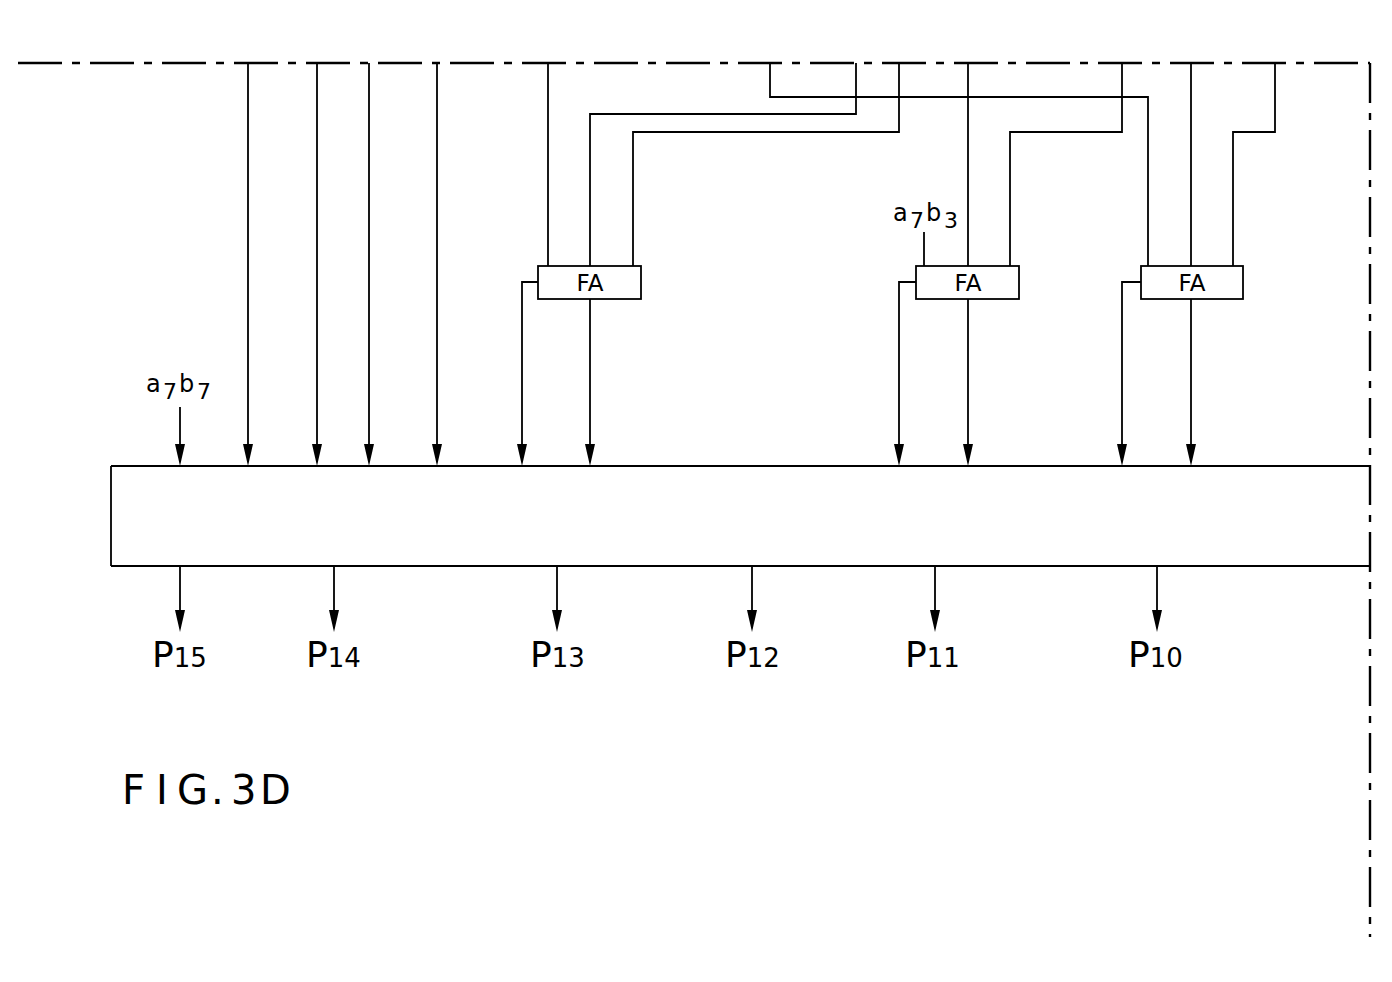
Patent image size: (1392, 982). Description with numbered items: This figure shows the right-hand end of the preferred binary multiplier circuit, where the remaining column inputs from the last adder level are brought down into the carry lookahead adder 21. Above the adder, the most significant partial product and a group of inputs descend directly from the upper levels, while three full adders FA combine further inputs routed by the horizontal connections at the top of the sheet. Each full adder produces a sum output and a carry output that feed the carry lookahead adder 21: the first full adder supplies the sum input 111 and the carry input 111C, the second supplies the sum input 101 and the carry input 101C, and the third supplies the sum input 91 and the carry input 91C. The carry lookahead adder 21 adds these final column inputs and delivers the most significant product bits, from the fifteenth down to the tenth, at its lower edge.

The carry lookahead adder 21 is at (127, 466).
The sum output line of full adder 111 is at (592, 362).
The carry output line of full adder 111C is at (522, 296).
The sum output line of full adder 101 is at (970, 368).
The carry output line of full adder 101C is at (899, 340).
The sum output line of full adder 91 is at (1193, 372).
The carry output line of full adder 91C is at (1122, 374).